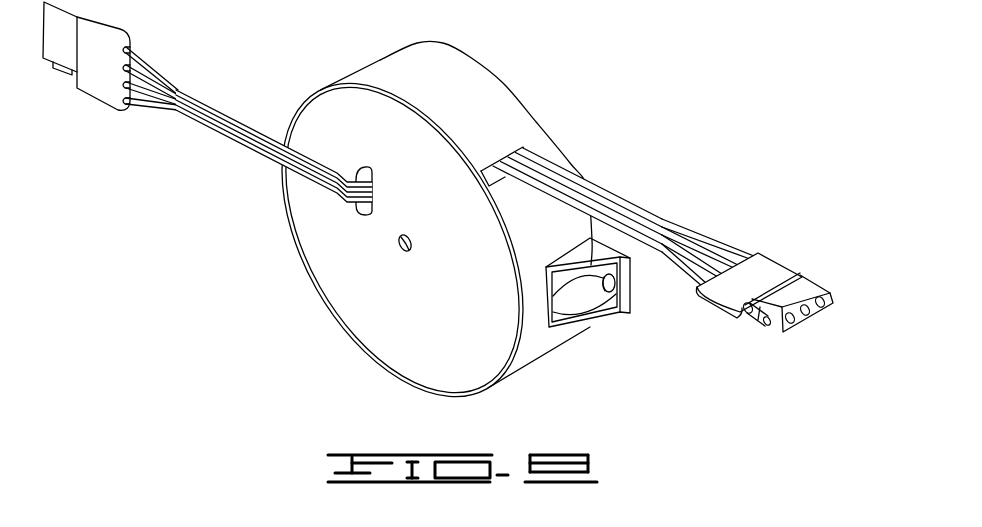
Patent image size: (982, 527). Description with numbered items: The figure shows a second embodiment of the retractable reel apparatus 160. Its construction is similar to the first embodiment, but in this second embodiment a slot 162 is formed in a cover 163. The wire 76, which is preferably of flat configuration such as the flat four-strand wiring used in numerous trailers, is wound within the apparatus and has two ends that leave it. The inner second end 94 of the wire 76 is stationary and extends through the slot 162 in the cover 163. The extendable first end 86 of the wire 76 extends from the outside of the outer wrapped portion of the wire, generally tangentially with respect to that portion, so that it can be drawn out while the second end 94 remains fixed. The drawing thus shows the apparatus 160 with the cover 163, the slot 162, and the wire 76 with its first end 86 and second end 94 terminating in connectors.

The retractable reel apparatus 160 is at (425, 230).
The slot 162 is at (360, 213).
The cover 163 is at (380, 338).
The second end 94 is at (201, 101).
The first end 86 is at (653, 232).
The wire 76 is at (438, 167).